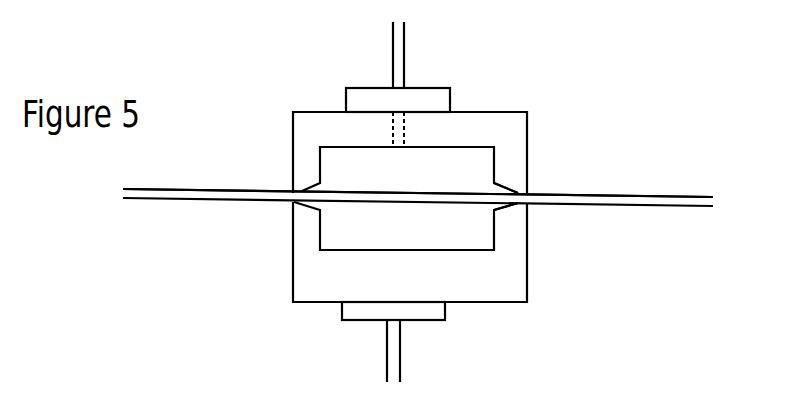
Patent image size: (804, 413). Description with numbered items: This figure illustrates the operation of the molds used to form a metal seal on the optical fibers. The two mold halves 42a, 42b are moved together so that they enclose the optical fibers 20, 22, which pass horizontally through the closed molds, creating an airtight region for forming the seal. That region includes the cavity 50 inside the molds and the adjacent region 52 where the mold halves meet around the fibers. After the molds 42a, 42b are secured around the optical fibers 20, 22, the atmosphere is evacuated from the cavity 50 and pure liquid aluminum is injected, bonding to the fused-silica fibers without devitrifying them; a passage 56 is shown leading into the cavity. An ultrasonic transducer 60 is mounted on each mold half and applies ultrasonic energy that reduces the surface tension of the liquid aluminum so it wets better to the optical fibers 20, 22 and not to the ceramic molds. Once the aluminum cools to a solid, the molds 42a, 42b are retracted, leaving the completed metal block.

The optical fiber 20 is at (611, 189).
The optical fiber 22 is at (418, 193).
The mold 42a is at (507, 122).
The mold 42b is at (517, 285).
The cavity 50 is at (343, 222).
The region 52 is at (490, 207).
The passage 56 is at (390, 127).
The ultrasonic transducer 60 is at (427, 93).